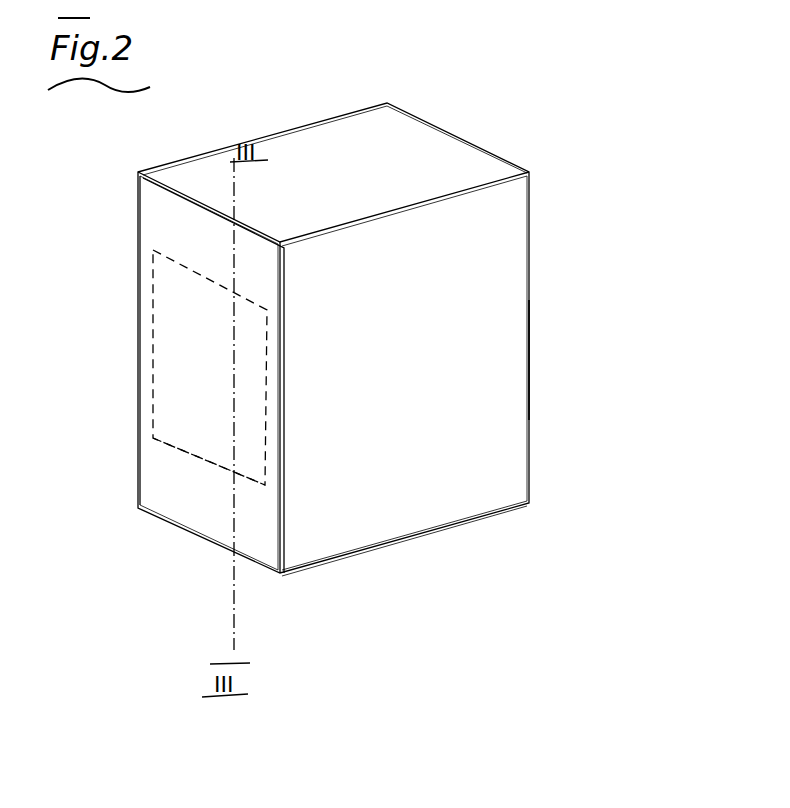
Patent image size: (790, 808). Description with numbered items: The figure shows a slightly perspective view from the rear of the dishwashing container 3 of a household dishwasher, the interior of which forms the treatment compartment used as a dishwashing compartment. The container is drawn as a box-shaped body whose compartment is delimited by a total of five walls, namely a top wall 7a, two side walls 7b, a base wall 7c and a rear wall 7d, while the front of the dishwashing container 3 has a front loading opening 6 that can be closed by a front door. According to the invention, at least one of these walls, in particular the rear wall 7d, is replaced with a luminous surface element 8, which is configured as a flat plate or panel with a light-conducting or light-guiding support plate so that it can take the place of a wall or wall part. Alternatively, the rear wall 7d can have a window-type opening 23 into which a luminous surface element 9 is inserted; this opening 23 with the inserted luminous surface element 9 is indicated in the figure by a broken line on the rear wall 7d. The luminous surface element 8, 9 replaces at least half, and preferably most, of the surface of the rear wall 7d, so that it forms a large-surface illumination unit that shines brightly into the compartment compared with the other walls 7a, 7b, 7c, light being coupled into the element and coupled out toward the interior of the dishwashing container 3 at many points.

The front loading opening 6 is at (533, 218).
The top wall 7a is at (322, 150).
The side wall 7b is at (450, 492).
The base wall 7c is at (370, 525).
The rear wall 7d is at (262, 535).
The luminous surface element 8 is at (203, 503).
The luminous surface element 9 is at (170, 383).
The window-type opening 23 is at (178, 442).
The dishwashing container 3 is at (503, 362).